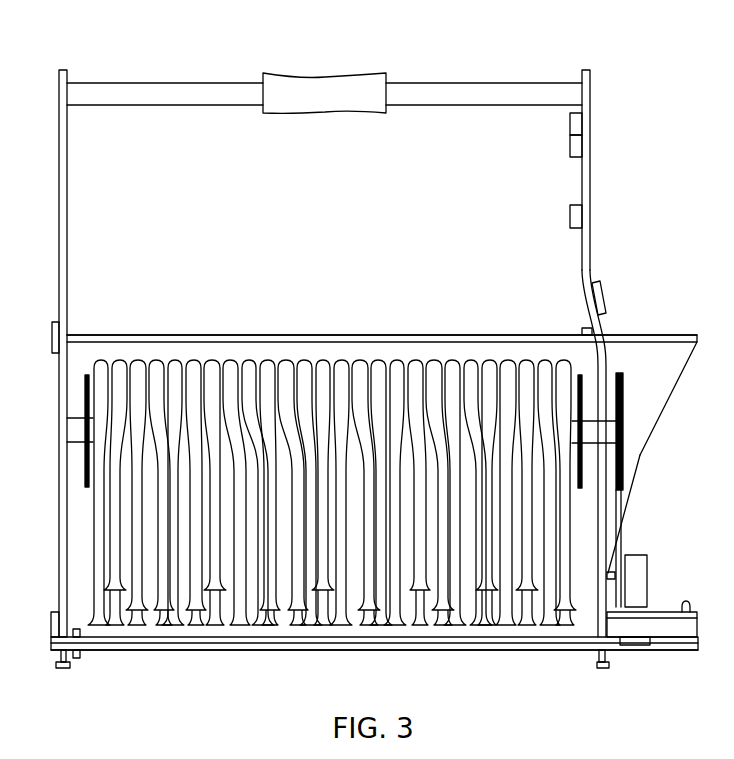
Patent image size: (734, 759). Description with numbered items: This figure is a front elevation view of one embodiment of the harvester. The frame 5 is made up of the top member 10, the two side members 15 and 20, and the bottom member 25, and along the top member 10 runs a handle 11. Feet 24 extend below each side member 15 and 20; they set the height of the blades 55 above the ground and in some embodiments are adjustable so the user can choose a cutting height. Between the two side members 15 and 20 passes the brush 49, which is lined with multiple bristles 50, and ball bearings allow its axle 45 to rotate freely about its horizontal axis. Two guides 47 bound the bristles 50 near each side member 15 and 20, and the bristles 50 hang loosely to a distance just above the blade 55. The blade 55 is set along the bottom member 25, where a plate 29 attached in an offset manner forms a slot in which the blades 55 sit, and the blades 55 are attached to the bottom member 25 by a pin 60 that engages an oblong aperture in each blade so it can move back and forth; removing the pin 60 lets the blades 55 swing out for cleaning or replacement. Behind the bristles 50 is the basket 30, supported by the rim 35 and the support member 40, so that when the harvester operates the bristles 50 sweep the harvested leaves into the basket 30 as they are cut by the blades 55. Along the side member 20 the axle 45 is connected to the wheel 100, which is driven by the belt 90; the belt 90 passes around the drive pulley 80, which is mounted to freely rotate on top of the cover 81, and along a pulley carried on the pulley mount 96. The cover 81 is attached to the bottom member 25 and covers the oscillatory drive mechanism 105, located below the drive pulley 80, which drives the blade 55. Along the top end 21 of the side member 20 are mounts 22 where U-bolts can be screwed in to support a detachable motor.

The frame 5 is at (36, 55).
The top member 10 is at (177, 90).
The handle 11 is at (326, 88).
The side member 15 is at (62, 162).
The side member 20 is at (588, 180).
The top end 21 is at (588, 120).
The mounts 22 is at (572, 145).
The feet 24 is at (64, 672).
The bottom member 25 is at (96, 650).
The plate 29 is at (218, 651).
The basket 30 is at (432, 348).
The rim 35 is at (236, 335).
The support member 40 is at (585, 323).
The axle 45 is at (75, 432).
The guides 47 is at (85, 388).
The brush 49 is at (594, 432).
The bristles 50 is at (385, 395).
The cutting blade 55 is at (452, 651).
The pin 60 is at (73, 633).
The drive pulley 80 is at (642, 578).
The cover 81 is at (688, 645).
The belt 90 is at (627, 521).
The pulley mount 96 is at (624, 546).
The wheel 100 is at (624, 444).
The oscillatory drive mechanism 105 is at (634, 651).